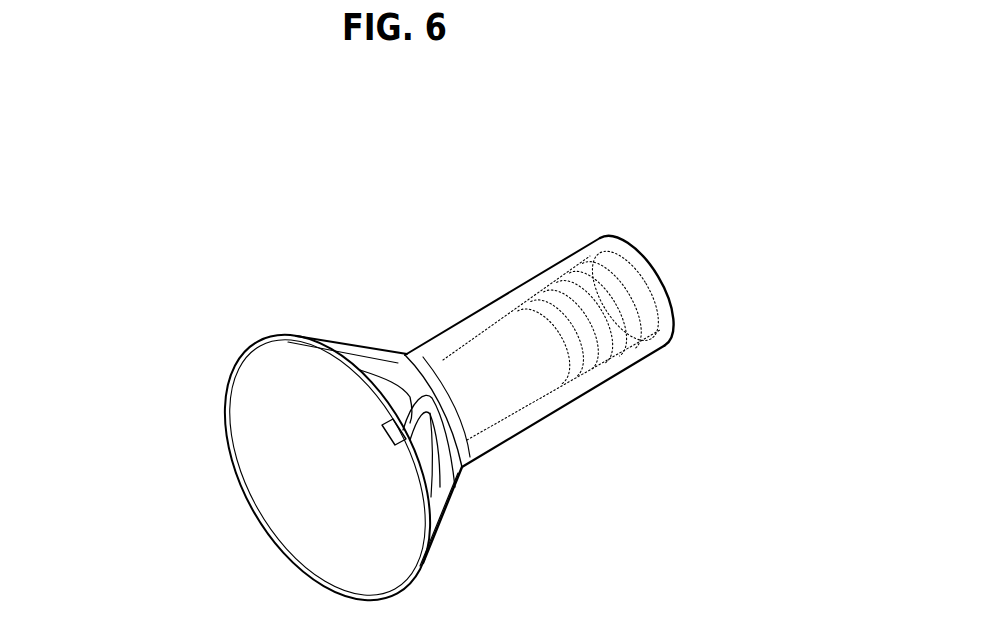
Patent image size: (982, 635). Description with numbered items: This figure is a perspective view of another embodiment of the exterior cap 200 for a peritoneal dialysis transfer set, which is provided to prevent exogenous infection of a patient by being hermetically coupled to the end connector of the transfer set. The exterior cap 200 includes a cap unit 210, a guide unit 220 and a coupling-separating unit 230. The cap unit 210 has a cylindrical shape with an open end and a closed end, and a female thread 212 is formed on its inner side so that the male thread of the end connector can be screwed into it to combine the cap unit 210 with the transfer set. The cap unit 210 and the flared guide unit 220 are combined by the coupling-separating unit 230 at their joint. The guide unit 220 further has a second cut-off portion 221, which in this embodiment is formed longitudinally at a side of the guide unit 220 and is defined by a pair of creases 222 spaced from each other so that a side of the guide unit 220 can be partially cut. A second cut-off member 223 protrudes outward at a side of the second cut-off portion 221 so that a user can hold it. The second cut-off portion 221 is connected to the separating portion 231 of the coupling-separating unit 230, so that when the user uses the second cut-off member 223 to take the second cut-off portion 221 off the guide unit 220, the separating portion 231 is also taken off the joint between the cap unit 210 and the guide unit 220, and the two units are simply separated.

The exterior cap 200 is at (532, 165).
The cap unit 210 is at (641, 386).
The female thread 212 is at (584, 262).
The guide unit 220 is at (241, 334).
The second cut-off portion 221 is at (357, 372).
The crease 222 is at (462, 470).
The second cut-off member 223 is at (443, 522).
The coupling-separating unit 230 is at (422, 345).
The separating portion 231 is at (410, 362).